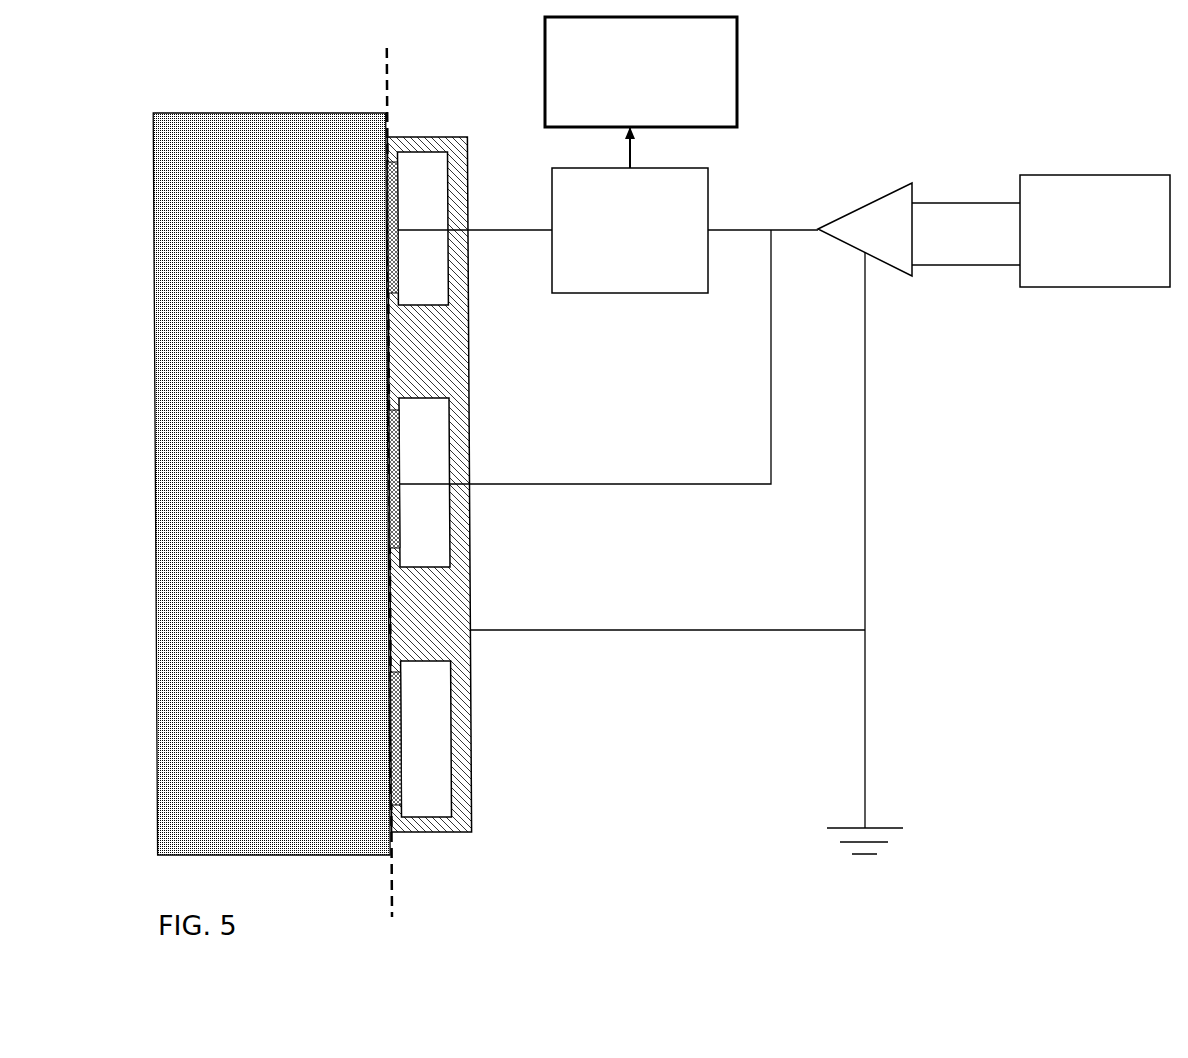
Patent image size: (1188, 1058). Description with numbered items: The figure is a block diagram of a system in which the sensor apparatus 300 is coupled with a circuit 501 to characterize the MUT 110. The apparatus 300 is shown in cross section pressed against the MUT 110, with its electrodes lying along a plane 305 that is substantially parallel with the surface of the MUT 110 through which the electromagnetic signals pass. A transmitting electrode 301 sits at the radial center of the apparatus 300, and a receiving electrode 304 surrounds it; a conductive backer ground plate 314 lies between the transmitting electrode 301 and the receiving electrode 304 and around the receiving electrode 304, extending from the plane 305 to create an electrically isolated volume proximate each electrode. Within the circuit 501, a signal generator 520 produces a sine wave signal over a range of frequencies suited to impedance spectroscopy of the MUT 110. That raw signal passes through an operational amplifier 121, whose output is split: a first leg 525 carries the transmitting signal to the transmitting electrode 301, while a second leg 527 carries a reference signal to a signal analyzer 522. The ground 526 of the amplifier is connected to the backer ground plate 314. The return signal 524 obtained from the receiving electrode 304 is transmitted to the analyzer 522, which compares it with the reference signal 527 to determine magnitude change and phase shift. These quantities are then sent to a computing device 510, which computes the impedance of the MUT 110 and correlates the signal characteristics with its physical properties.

The MUT 110 is at (325, 532).
The amplifier 121 is at (886, 176).
The apparatus 300 is at (490, 850).
The transmitting electrode 301 is at (398, 522).
The receiving electrode 304 is at (388, 251).
The plane 305 is at (395, 88).
The backer ground plate 314 is at (477, 660).
The circuit 501 is at (873, 688).
The computing device 510 is at (717, 105).
The signal generator 520 is at (1116, 278).
The signal analyzer 522 is at (657, 288).
The return signal 524 is at (481, 223).
The first leg 525 is at (637, 470).
The ground 526 is at (682, 620).
The second leg 527 is at (737, 237).